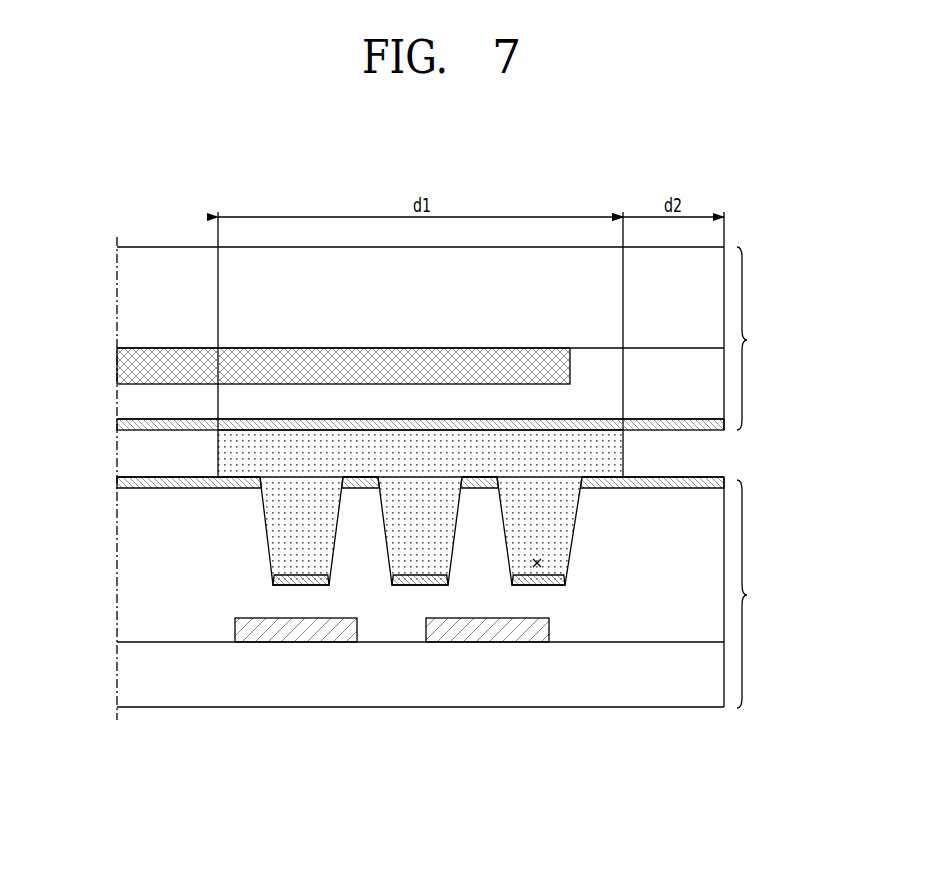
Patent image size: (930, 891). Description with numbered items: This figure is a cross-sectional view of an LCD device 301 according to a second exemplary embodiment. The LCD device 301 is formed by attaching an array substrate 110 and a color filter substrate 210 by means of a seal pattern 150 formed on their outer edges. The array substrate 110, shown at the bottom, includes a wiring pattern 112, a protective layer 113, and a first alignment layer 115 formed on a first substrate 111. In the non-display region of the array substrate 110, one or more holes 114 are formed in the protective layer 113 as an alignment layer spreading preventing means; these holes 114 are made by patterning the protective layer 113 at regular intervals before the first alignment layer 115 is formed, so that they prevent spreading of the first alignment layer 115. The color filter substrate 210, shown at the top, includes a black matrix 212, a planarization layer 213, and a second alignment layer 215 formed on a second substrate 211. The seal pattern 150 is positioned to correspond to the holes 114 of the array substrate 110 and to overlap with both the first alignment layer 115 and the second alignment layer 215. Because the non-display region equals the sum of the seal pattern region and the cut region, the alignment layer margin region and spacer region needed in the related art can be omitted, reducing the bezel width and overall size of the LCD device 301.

The LCD device 301 is at (732, 195).
The color filter substrate 210 is at (757, 338).
The second substrate 211 is at (124, 298).
The black matrix 212 is at (124, 365).
The planarization layer 213 is at (124, 403).
The second alignment layer 215 is at (124, 425).
The array substrate 110 is at (757, 594).
The first substrate 111 is at (124, 681).
The wiring pattern 112 is at (243, 628).
The protective layer 113 is at (124, 555).
The holes 114 is at (537, 568).
The first alignment layer 115 is at (124, 483).
The seal pattern 150 is at (409, 562).